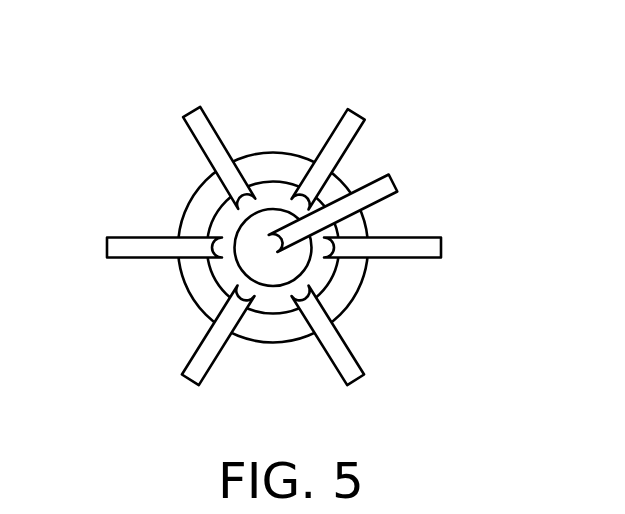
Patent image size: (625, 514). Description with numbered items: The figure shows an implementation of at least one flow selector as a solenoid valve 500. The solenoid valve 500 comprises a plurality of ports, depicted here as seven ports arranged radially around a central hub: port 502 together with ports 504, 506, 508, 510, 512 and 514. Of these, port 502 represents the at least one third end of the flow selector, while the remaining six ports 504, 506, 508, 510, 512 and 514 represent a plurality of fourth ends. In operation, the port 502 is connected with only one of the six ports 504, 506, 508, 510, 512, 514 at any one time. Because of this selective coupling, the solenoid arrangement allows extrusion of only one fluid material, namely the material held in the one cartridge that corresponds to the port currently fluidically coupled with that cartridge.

The solenoid valve 500 is at (380, 172).
The port 502 is at (376, 190).
The port 504 is at (425, 229).
The port 506 is at (365, 360).
The port 508 is at (177, 360).
The port 510 is at (133, 218).
The port 512 is at (240, 135).
The port 514 is at (368, 134).